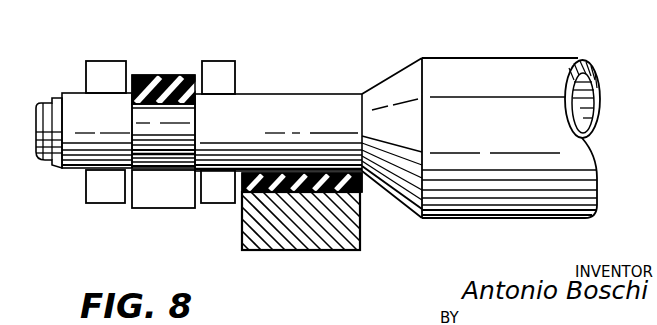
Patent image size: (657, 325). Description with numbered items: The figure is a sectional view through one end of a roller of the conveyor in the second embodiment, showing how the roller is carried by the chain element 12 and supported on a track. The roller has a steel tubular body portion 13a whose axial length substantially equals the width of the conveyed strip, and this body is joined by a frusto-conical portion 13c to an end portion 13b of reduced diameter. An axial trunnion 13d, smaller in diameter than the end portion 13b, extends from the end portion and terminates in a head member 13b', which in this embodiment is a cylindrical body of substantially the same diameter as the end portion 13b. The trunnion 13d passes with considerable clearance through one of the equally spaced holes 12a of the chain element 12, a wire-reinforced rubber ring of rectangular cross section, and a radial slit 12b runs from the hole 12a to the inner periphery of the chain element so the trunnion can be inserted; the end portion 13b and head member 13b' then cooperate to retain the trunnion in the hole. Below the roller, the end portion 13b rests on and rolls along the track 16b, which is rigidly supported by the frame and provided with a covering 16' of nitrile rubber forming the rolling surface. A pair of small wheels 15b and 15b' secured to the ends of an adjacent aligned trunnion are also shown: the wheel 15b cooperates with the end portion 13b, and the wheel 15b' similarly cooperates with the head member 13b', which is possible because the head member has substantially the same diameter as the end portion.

The chain element 12 is at (163, 73).
The holes 12a is at (168, 107).
The radial slit 12b is at (172, 193).
The tubular body portion 13a is at (463, 73).
The end portion 13b is at (278, 118).
The head member 13b' is at (60, 150).
The frusto-conical portion 13c is at (397, 87).
The axial trunnion 13d is at (147, 128).
The small wheel 15b is at (231, 115).
The small wheel 15b' is at (94, 117).
The covering or layer 16' is at (323, 203).
The track 16b is at (308, 237).